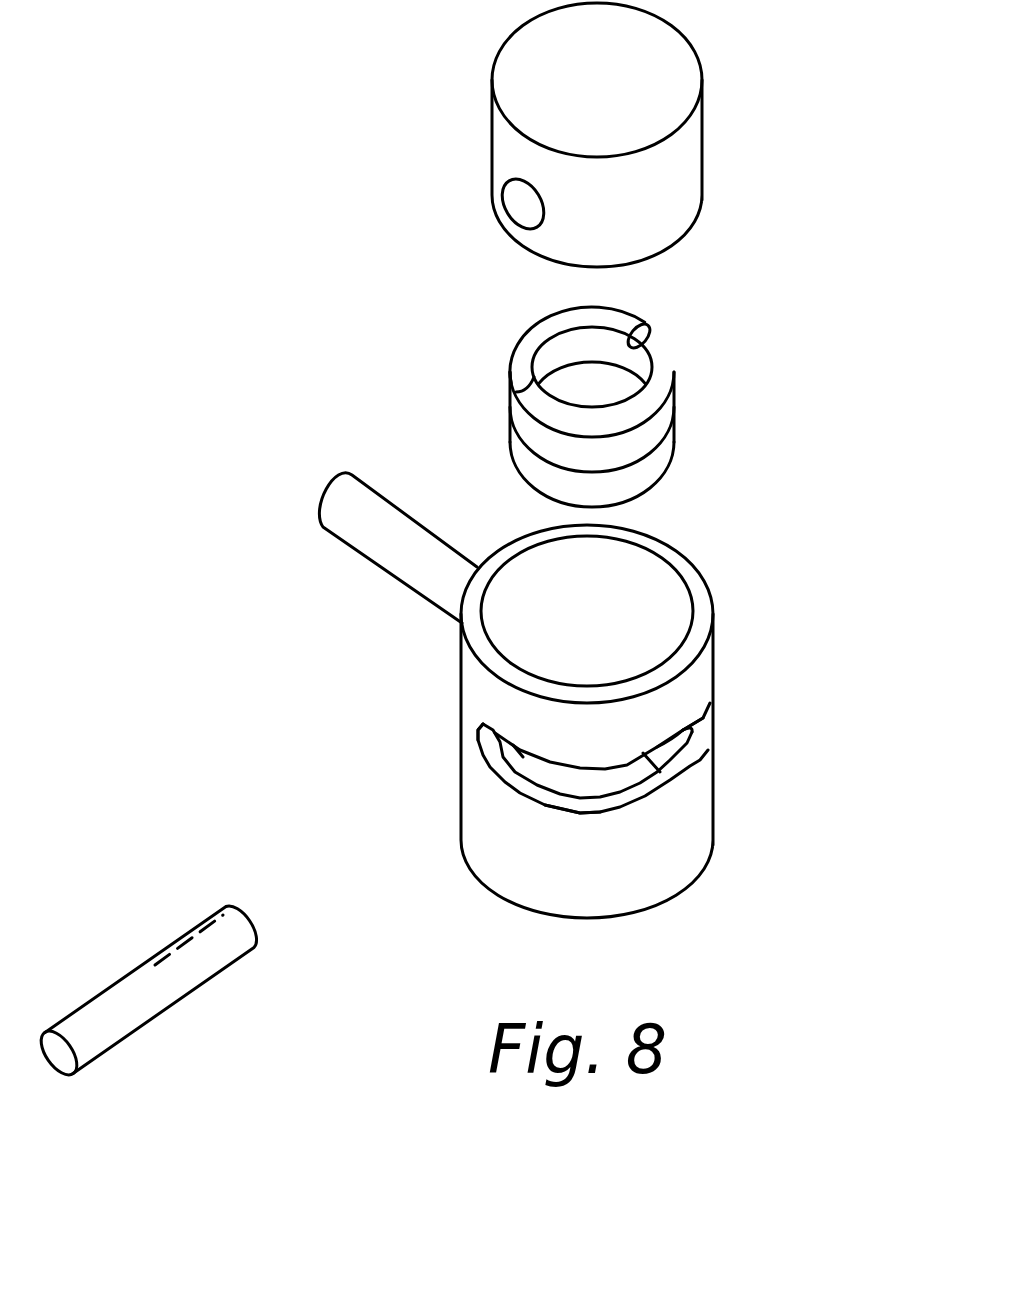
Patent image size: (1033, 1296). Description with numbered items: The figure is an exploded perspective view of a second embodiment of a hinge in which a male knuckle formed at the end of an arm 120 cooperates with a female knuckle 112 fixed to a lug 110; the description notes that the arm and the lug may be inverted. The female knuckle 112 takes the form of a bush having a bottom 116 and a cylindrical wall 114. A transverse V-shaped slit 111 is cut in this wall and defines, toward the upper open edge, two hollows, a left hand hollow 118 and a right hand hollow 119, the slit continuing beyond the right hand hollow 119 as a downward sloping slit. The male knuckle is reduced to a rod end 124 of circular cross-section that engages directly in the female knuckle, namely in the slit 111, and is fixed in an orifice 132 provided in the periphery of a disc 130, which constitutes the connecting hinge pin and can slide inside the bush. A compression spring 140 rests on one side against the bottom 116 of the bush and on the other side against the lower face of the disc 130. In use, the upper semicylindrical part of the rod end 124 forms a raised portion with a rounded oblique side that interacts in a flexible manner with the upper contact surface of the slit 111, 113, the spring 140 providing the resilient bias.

The lug 110 is at (410, 555).
The transverse V-shaped slit 111 is at (563, 812).
The female knuckle 112 is at (725, 818).
The upper contact surface of the slit 113 is at (698, 745).
The cylindrical wall 114 is at (642, 572).
The bottom 116 is at (557, 775).
The left hand hollow 118 is at (490, 722).
The right hand hollow 119 is at (675, 723).
The arm 120 is at (92, 1038).
The rod end 124 is at (202, 918).
The disc 130 is at (662, 168).
The orifice 132 is at (522, 197).
The compression spring 140 is at (645, 372).